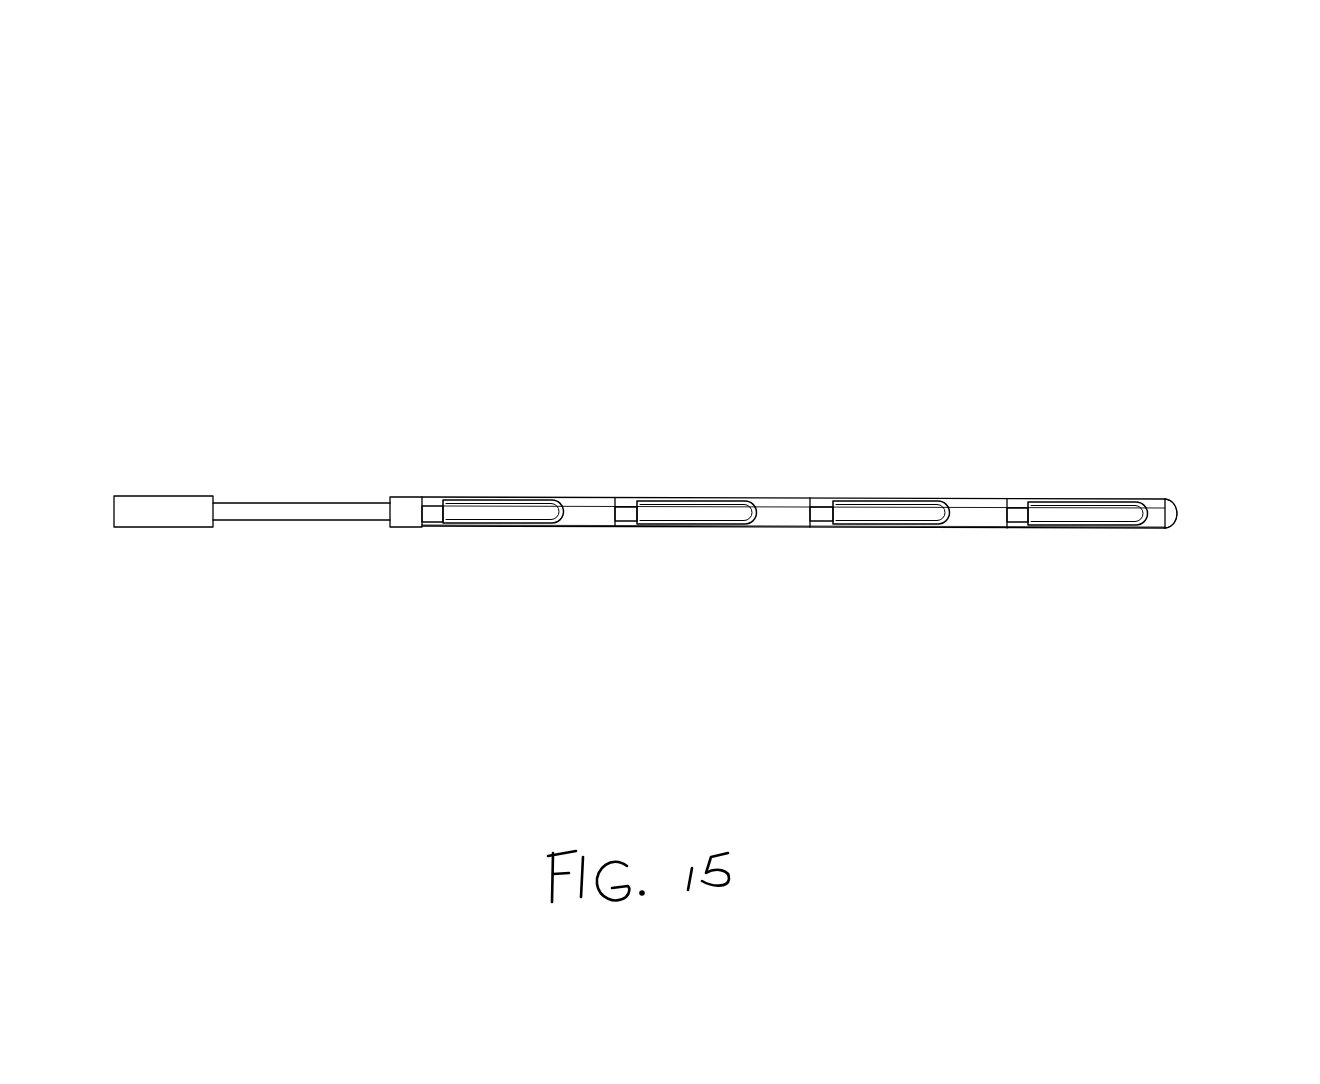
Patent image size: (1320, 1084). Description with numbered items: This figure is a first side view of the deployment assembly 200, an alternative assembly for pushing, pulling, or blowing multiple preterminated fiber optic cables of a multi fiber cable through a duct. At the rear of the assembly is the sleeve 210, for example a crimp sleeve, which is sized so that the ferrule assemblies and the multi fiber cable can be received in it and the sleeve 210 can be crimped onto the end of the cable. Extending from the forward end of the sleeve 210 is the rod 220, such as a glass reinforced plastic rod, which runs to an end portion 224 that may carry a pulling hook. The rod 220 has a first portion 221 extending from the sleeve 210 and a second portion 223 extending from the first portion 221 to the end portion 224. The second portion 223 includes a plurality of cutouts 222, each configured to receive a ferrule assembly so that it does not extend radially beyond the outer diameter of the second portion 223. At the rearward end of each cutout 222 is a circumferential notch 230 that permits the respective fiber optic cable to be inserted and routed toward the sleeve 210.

The deployment assembly 200 is at (655, 252).
The sleeve 210 is at (160, 527).
The first portion 221 is at (292, 525).
The rod 220 is at (600, 528).
The cutouts 222 is at (488, 516).
The second portion 223 is at (795, 528).
The end portion 224 is at (1173, 514).
The circumferential notch 230 is at (432, 492).